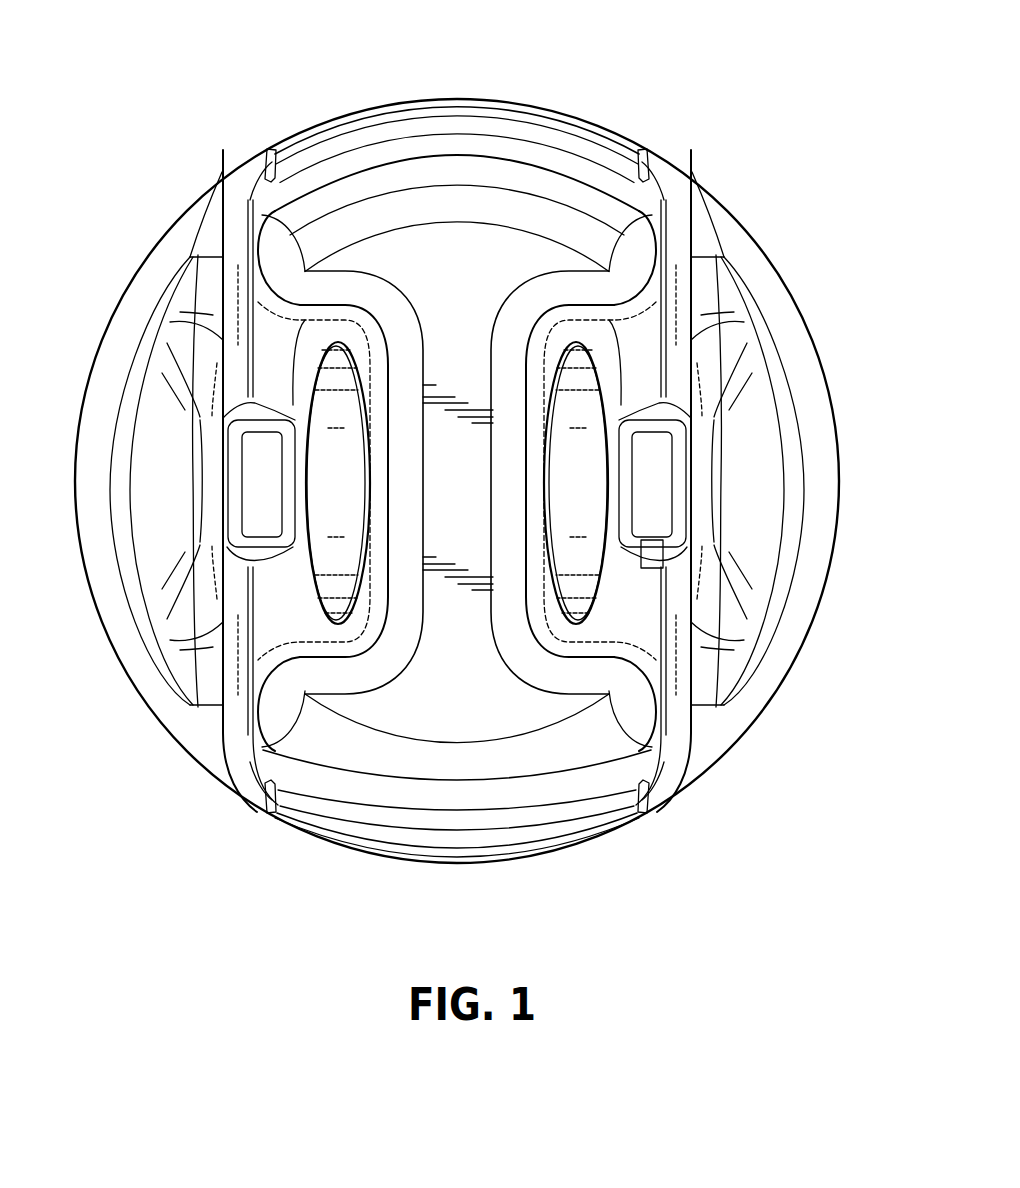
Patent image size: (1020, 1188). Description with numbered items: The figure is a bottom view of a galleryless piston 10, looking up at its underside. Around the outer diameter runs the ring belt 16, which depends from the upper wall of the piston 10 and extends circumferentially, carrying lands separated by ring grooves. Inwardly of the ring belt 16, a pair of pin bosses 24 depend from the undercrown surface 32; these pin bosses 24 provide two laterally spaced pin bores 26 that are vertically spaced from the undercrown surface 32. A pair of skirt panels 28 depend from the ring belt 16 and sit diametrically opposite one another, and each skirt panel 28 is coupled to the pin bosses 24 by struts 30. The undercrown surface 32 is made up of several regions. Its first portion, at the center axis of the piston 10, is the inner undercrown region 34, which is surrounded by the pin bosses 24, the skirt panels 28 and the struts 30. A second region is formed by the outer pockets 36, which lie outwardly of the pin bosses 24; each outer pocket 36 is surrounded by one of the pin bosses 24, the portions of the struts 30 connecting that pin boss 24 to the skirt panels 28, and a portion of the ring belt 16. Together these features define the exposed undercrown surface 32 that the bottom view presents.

The piston 10 is at (808, 138).
The ring belt 16 is at (840, 479).
The pin bosses 24 is at (273, 393).
The pin bores 26 is at (345, 495).
The skirt panels 28 is at (453, 98).
The struts 30 is at (267, 272).
The undercrown surface 32 is at (545, 245).
The inner undercrown region 34 is at (467, 272).
The outer pockets 36 is at (177, 484).